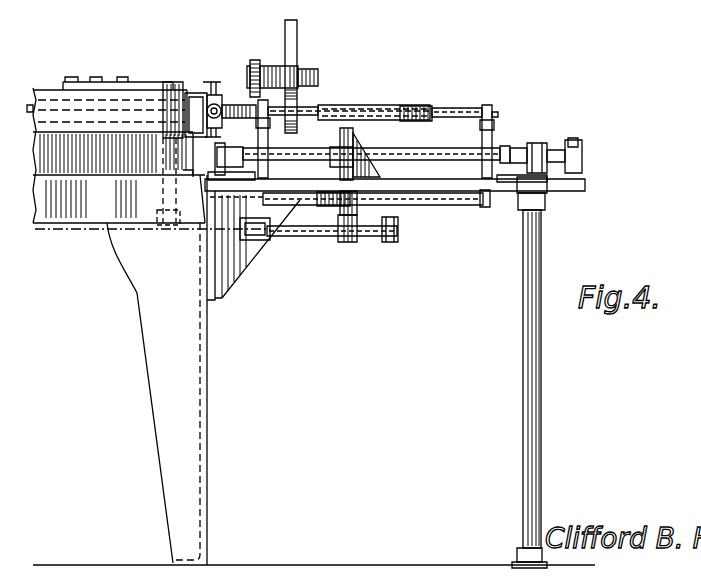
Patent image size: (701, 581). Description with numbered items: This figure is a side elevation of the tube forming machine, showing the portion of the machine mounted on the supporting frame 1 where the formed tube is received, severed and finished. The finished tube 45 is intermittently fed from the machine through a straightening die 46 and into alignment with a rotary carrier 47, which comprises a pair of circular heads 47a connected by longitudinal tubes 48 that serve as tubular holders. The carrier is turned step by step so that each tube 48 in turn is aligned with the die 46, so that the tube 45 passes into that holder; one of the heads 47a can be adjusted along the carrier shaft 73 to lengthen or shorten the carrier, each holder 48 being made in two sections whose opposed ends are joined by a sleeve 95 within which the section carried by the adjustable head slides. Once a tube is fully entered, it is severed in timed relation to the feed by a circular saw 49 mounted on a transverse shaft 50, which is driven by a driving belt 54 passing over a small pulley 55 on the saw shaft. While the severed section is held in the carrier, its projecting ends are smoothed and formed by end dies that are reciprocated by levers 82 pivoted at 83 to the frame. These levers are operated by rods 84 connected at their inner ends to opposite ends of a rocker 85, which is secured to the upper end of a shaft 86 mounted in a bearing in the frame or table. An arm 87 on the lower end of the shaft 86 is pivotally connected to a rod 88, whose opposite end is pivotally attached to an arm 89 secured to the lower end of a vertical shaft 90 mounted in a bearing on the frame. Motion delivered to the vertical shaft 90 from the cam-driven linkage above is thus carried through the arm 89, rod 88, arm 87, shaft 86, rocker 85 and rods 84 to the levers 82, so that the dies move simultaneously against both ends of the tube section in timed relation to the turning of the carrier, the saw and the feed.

The supporting frame 1 is at (72, 224).
The finished tube 45 is at (195, 95).
The straightening die 46 is at (233, 100).
The rotary carrier 47 is at (384, 100).
The circular heads 47a is at (262, 131).
The longitudinal tubes 48 is at (455, 107).
The circular saw 49 is at (256, 62).
The transverse shaft 50 is at (318, 78).
The driving belt 54 is at (292, 45).
The small pulley 55 is at (300, 72).
The carrier shaft 73 is at (548, 150).
The levers 82 is at (509, 182).
The pivot 83 is at (556, 5).
The rods 84 is at (313, 150).
The rocker 85 is at (341, 162).
The shaft 86 is at (348, 243).
The arm 87 is at (383, 243).
The rod 88 is at (302, 237).
The arm 89 is at (186, 228).
The vertical shaft 90 is at (165, 82).
The sleeve 95 is at (425, 100).